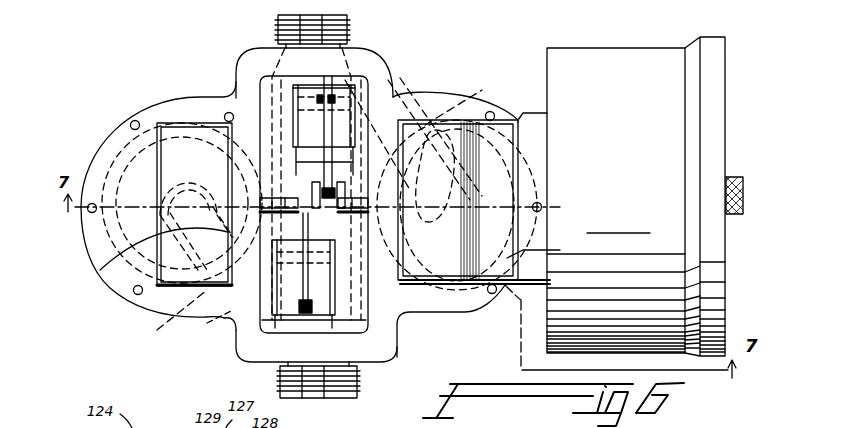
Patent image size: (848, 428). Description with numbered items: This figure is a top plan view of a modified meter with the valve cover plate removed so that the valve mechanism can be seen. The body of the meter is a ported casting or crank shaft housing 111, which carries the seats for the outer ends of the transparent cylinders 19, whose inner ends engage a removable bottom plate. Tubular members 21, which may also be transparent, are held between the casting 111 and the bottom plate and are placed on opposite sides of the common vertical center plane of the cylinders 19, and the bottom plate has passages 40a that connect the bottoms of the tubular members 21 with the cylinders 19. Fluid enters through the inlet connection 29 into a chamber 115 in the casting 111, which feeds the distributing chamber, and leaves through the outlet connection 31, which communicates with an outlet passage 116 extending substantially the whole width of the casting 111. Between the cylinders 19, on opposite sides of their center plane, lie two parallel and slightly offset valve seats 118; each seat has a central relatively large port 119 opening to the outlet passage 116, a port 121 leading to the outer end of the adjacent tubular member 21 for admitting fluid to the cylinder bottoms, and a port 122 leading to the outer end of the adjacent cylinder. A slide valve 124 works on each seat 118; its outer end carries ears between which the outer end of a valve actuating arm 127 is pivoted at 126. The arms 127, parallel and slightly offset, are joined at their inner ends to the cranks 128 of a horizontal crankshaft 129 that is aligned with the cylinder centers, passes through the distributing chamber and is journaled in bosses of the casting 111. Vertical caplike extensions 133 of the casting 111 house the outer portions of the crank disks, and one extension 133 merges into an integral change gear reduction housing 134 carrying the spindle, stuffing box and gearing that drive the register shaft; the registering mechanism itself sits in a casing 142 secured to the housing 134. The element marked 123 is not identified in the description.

The chamber 115 is at (380, 345).
The ported casting or crank shaft housing 111 is at (148, 302).
The transparent cylinders 19 is at (93, 245).
The vertical caplike extensions 133 is at (133, 291).
The slide valve 124 is at (310, 127).
The outlet passage 116 is at (248, 74).
The port 121 is at (280, 340).
The outlet connection 31 is at (352, 24).
The inlet connection 29 is at (357, 388).
The valve actuating arm 127 is at (300, 133).
The valve stem 123 is at (328, 129).
The cranks 128 is at (313, 199).
The crankshaft 129 is at (373, 226).
The port 122 is at (315, 248).
The central port 119 is at (410, 108).
The tubular members 21 is at (392, 78).
The passages 40a is at (324, 213).
The change gear reduction housing 134 is at (507, 290).
The casing 142 is at (700, 266).
The pivotal connection 126 is at (72, 427).
The valve seats 118 is at (140, 427).